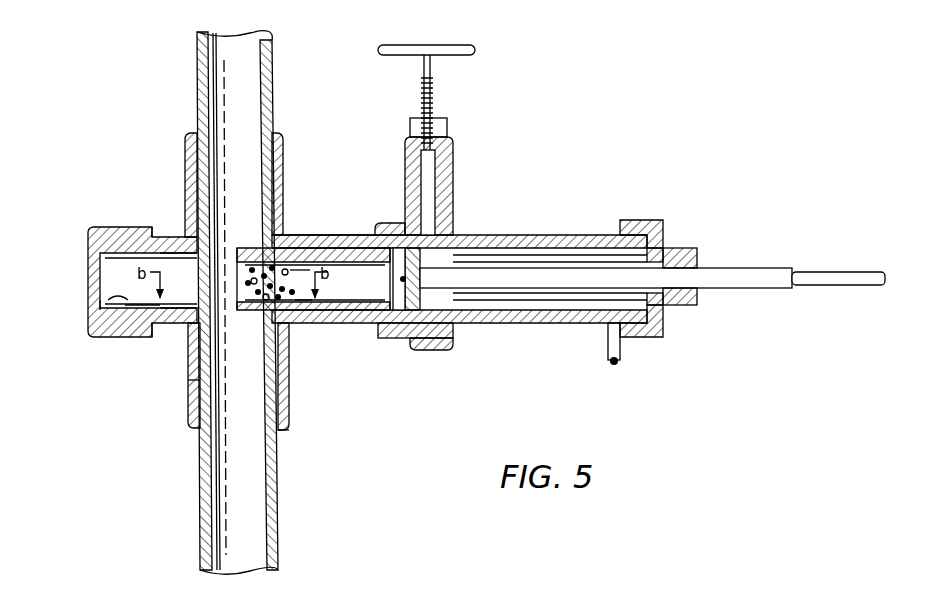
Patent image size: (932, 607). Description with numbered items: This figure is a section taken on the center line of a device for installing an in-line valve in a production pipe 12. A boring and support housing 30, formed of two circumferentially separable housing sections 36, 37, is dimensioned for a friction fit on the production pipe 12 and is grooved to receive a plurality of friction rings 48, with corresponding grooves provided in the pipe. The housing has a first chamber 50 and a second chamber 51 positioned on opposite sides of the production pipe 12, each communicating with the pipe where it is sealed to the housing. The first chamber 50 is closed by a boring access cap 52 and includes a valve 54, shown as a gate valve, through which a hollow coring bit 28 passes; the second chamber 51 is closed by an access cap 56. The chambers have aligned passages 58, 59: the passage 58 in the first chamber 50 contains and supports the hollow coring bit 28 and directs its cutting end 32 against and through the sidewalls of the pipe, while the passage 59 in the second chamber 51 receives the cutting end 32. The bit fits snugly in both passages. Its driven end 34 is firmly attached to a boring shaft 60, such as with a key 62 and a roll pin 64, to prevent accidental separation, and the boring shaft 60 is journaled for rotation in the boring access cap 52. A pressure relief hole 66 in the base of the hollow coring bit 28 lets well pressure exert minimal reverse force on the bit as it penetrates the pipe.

The production pipe 12 is at (273, 56).
The hollow coring bit 28 is at (325, 322).
The boring and support housing 30 is at (339, 226).
The cutting end 32 is at (190, 380).
The driven end 34 is at (420, 233).
The housing section 36 is at (290, 428).
The housing section 37 is at (196, 392).
The friction rings 48 is at (187, 140).
The first chamber 50 is at (298, 235).
The second chamber 51 is at (168, 325).
The boring access cap 52 is at (672, 232).
The valve 54 is at (448, 137).
The access cap 56 is at (90, 240).
The passage 58 is at (368, 327).
The passage 59 is at (90, 328).
The boring shaft 60 is at (735, 268).
The key 62 is at (467, 330).
The roll pin 64 is at (415, 330).
The pressure relief hole 66 is at (458, 234).